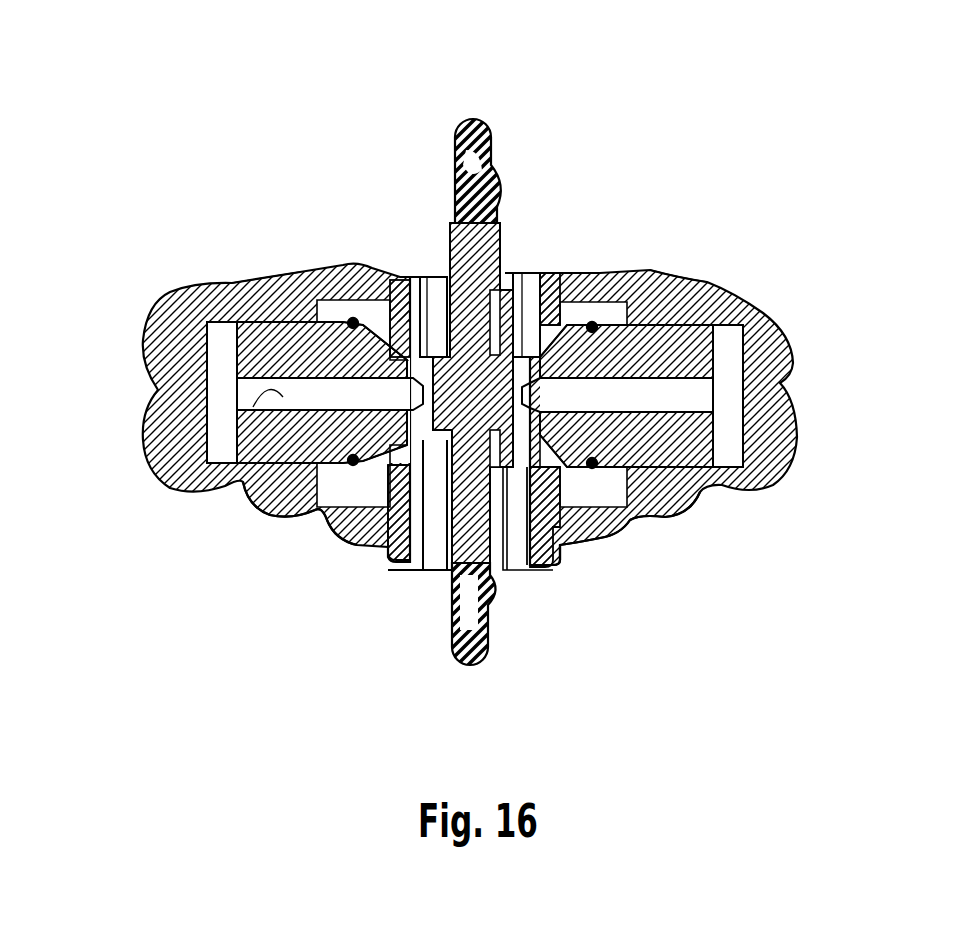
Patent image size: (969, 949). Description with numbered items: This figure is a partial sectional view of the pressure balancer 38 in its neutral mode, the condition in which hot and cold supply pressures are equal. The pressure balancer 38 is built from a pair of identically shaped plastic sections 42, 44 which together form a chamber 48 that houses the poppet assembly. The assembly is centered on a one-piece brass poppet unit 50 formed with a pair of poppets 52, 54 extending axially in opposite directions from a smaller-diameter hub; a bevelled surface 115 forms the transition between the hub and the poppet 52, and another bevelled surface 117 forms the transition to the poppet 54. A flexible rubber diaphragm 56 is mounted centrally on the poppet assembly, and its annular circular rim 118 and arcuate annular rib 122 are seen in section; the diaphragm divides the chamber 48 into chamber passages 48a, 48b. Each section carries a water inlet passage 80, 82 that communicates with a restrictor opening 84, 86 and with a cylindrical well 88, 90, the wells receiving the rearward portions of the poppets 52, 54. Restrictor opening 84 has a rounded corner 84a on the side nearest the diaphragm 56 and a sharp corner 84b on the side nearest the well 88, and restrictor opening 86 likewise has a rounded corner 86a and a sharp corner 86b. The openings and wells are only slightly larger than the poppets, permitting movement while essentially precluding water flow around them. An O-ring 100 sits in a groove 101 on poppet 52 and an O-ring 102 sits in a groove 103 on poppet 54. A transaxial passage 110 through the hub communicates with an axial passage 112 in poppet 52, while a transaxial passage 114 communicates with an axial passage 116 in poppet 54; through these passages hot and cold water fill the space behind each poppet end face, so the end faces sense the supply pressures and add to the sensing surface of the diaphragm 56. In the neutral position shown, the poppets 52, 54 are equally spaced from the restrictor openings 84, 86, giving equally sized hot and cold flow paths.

The pressure balancer 38 is at (303, 111).
The plastic section 42 is at (205, 285).
The plastic section 44 is at (725, 288).
The chamber 48 is at (447, 580).
The chamber passage 48a is at (421, 530).
The chamber passage 48b is at (518, 530).
The poppet unit 50 is at (229, 442).
The poppet 52 is at (237, 364).
The poppet 54 is at (700, 392).
The flexible diaphragm 56 is at (503, 127).
The water inlet passage 80 is at (327, 533).
The water inlet passage 82 is at (573, 543).
The restrictor opening 84 is at (427, 300).
The rounded corner 84a is at (420, 275).
The sharp corner 84b is at (343, 263).
The restrictor opening 86 is at (522, 275).
The rounded corner 86a is at (535, 275).
The sharp corner 86b is at (597, 275).
The cylindrical well 88 is at (210, 363).
The cylindrical well 90 is at (707, 347).
The O-ring 100 is at (350, 470).
The groove 101 is at (300, 273).
The O-ring 102 is at (673, 520).
The groove 103 is at (640, 275).
The passage 110 is at (385, 495).
The passage 112 is at (240, 495).
The passage 114 is at (563, 503).
The bevelled surface 115 is at (445, 275).
The passage 116 is at (715, 440).
The bevelled surface 117 is at (605, 522).
The annular circular rim 118 is at (478, 116).
The arcuate annular rib 122 is at (486, 668).